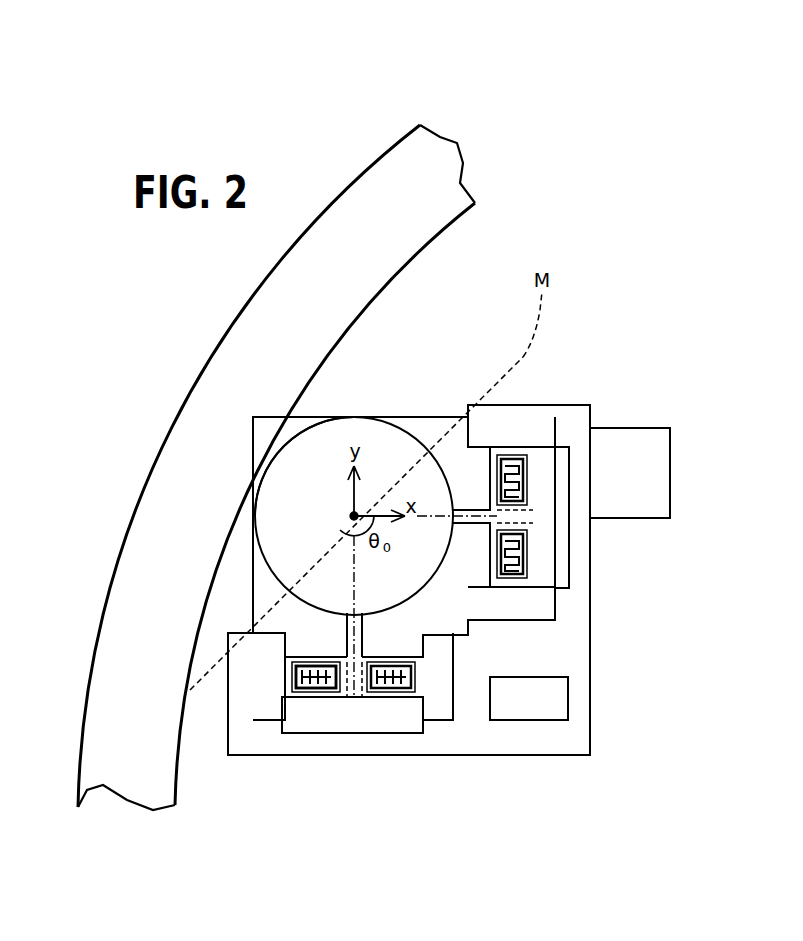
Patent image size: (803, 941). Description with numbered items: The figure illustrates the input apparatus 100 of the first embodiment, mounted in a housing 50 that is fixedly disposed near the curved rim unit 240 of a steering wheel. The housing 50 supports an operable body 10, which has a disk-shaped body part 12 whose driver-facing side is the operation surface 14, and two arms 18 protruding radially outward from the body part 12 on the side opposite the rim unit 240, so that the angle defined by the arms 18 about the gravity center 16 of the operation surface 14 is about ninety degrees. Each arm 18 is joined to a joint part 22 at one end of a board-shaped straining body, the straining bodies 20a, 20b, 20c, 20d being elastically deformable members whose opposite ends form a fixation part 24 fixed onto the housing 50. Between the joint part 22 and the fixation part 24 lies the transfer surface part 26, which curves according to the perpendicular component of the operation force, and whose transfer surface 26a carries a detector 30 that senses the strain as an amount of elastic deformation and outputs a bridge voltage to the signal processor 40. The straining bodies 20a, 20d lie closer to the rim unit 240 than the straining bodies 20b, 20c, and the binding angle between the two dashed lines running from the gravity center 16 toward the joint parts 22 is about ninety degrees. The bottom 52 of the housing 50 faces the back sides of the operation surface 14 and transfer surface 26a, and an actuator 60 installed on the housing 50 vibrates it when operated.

The rim unit 240 is at (385, 168).
The input apparatus 100 is at (630, 313).
The operable body 10 is at (410, 417).
The body part 12 is at (440, 417).
The operation surface 14 is at (312, 485).
The gravity center 16 is at (354, 516).
The arm 18 is at (467, 490).
The straining body 20a is at (573, 417).
The straining body 20b is at (555, 607).
The straining body 20c is at (428, 720).
The straining body 20d is at (257, 720).
The joint part 22 is at (350, 697).
The fixation part 24 is at (283, 678).
The transfer surface part 26 is at (325, 693).
The transfer surface 26a is at (312, 650).
The detector 30 is at (304, 692).
The signal processor 40 is at (568, 708).
The housing 50 is at (555, 757).
The bottom 52 is at (265, 592).
The actuator 60 is at (670, 430).